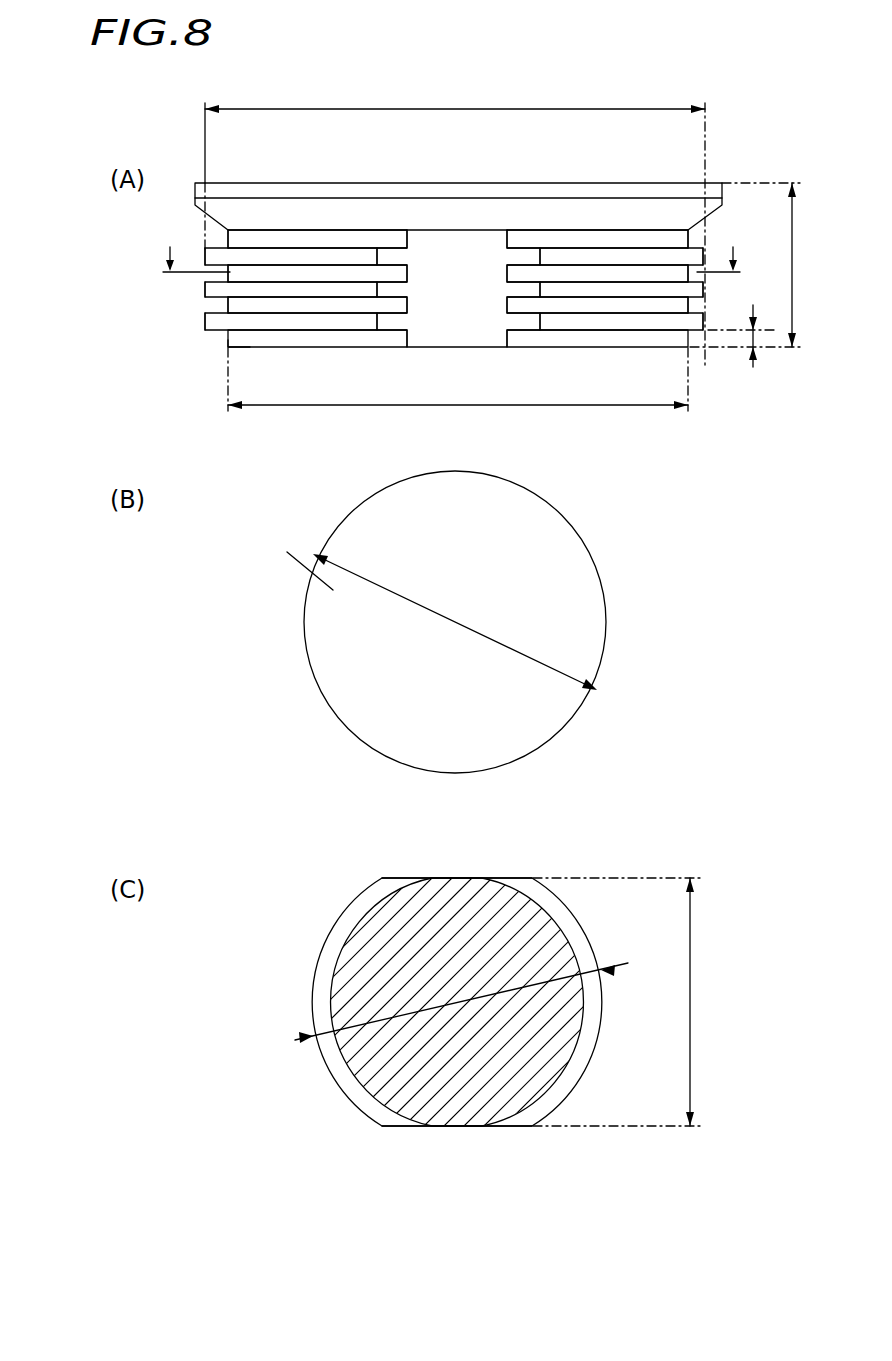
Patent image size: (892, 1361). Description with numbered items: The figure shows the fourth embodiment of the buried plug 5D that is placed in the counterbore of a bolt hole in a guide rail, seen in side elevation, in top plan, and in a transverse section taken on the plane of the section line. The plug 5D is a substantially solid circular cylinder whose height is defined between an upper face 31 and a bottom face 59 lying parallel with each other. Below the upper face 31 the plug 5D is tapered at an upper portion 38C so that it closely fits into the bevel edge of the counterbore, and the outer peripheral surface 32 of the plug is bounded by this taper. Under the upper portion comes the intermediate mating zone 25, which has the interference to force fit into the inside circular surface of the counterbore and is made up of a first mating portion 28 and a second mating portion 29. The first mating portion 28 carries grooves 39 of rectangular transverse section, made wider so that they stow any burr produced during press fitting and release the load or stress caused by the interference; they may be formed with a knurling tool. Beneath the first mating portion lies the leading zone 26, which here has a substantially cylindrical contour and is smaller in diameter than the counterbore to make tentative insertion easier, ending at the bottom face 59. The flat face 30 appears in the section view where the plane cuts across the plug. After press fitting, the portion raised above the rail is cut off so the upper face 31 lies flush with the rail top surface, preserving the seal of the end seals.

The buried plug 5D is at (563, 181).
The upper face 31 is at (290, 183).
The upper portion 38C is at (383, 192).
The outer peripheral surface 32 is at (205, 292).
The mating zone 25 is at (470, 658).
The first mating portion 28 is at (607, 260).
The second mating portion 29 is at (477, 313).
The flat surface 30 is at (453, 252).
The groove 39 is at (250, 305).
The leading zone 26 is at (620, 340).
The bottom face 59 is at (275, 348).